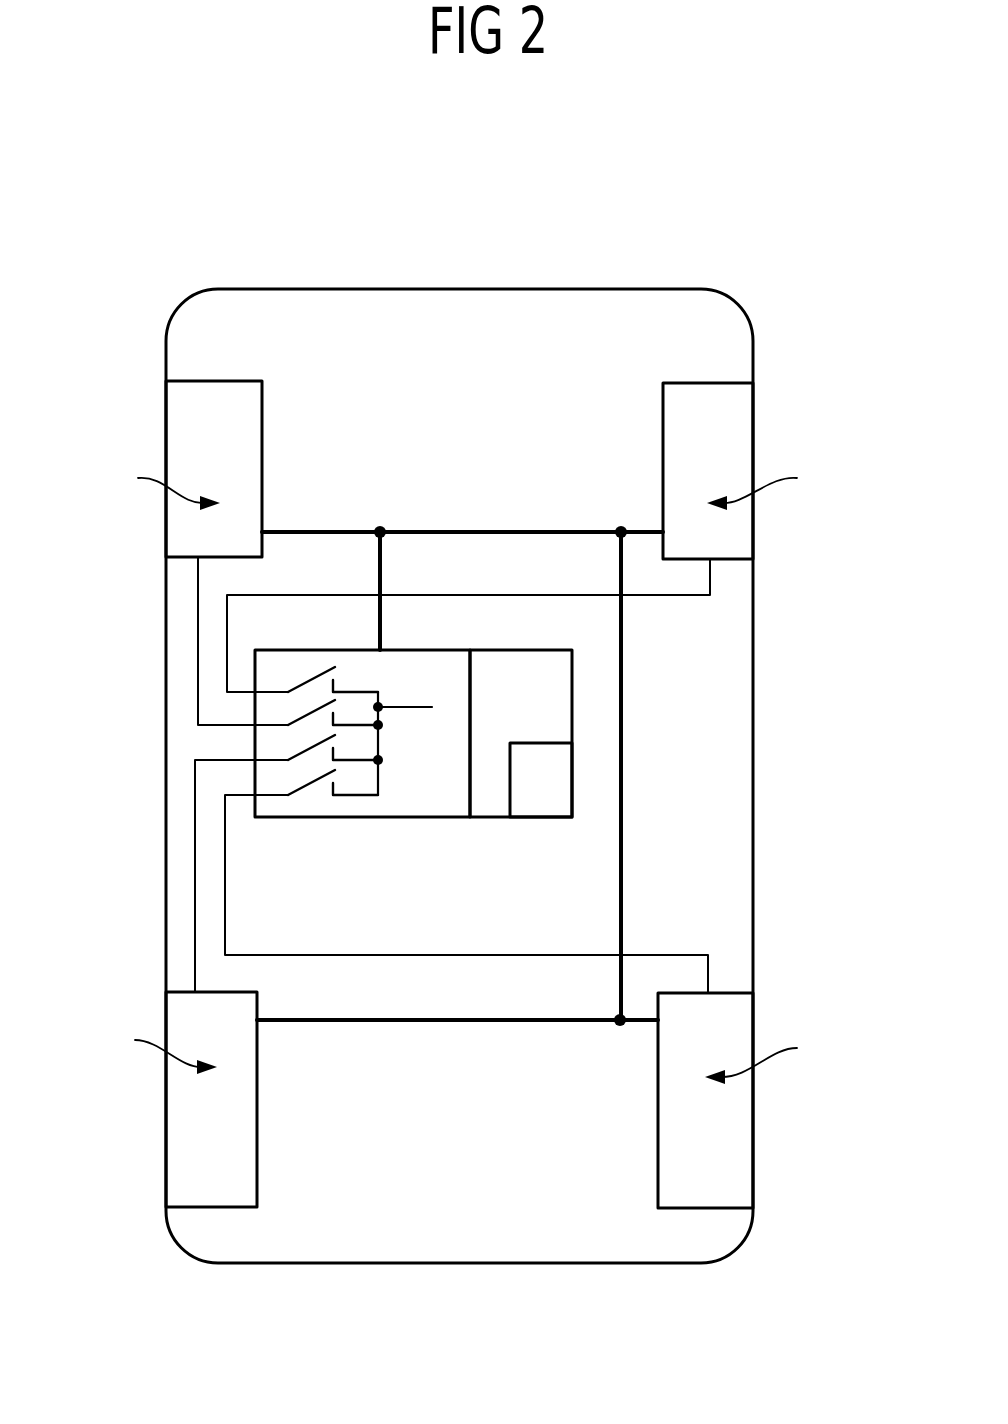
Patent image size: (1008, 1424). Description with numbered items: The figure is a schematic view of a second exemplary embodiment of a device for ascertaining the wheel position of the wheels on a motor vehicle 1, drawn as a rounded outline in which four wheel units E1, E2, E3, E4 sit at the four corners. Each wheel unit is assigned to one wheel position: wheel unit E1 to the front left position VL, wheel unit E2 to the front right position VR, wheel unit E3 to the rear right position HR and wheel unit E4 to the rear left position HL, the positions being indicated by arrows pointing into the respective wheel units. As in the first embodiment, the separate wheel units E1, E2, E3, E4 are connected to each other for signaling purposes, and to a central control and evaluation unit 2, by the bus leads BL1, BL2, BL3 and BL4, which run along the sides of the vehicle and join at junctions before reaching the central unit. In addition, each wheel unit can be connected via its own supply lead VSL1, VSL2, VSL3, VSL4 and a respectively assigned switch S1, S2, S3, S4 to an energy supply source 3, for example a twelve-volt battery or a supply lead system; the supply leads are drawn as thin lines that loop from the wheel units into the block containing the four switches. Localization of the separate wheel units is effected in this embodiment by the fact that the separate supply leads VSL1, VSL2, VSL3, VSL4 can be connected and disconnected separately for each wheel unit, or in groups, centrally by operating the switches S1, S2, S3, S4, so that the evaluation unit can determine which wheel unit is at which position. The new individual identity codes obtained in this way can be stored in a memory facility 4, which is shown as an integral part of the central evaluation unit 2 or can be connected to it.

The motor vehicle 1 is at (613, 327).
The central control and evaluation unit 2 is at (525, 722).
The energy supply source 3 is at (442, 787).
The memory facility 4 is at (555, 802).
The wheel unit E1 is at (197, 420).
The wheel unit E2 is at (732, 415).
The wheel unit E3 is at (732, 1145).
The wheel unit E4 is at (190, 1130).
The front left wheel position VL is at (156, 483).
The front right wheel position VR is at (776, 483).
The rear left wheel position HL is at (152, 1045).
The rear right wheel position HR is at (775, 1055).
The bus lead BL1 is at (380, 575).
The bus lead BL2 is at (347, 532).
The bus lead BL3 is at (621, 802).
The bus lead BL4 is at (387, 1020).
The supply lead VSL1 is at (198, 617).
The supply lead VSL2 is at (488, 595).
The supply lead VSL3 is at (522, 955).
The supply lead VSL4 is at (195, 913).
The switch S1 is at (307, 717).
The switch S2 is at (307, 683).
The switch S3 is at (307, 787).
The switch S4 is at (307, 752).